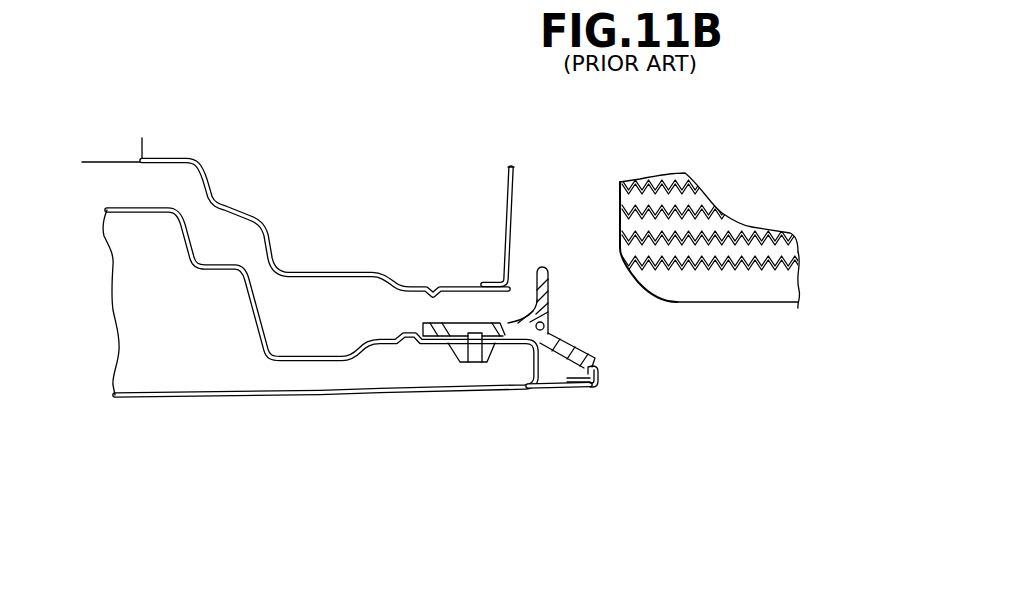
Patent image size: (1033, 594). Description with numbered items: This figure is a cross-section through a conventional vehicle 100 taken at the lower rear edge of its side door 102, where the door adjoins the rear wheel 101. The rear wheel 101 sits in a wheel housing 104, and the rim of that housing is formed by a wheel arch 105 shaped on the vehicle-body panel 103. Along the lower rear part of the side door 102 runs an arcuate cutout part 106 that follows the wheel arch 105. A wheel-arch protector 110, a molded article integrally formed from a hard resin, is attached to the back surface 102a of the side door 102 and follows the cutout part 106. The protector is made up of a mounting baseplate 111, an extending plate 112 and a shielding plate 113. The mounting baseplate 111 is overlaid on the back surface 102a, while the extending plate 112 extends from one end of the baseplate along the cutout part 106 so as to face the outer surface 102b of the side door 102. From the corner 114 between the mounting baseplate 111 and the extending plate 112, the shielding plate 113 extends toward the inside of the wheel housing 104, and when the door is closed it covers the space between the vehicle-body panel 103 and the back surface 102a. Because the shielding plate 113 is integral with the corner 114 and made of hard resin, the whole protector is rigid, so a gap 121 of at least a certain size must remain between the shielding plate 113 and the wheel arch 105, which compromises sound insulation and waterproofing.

The vehicle 100 is at (97, 410).
The rear wheel 101 is at (742, 292).
The side door 102 is at (373, 353).
The back surface 102a is at (438, 322).
The outer surface 102b is at (287, 398).
The vehicle-body panel 103 is at (325, 292).
The wheel housing 104 is at (518, 183).
The wheel arch 105 is at (581, 260).
The cutout part 106 is at (595, 388).
The wheel-arch protector 110 is at (483, 428).
The mounting baseplate 111 is at (452, 332).
The extending plate 112 is at (560, 348).
The shielding plate 113 is at (536, 300).
The corner 114 is at (547, 330).
The gap 121 is at (530, 264).